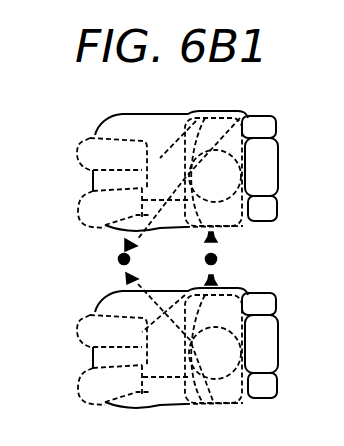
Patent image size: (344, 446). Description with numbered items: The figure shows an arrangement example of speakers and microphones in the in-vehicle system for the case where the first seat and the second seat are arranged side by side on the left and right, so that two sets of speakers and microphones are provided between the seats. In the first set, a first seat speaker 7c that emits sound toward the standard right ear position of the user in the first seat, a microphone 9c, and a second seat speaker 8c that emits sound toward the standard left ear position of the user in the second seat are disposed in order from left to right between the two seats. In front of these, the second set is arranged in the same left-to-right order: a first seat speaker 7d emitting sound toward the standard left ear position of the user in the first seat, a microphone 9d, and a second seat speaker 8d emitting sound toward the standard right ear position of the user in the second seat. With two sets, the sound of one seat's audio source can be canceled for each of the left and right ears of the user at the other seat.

The first seat speaker 7c is at (217, 281).
The first seat speaker 7d is at (127, 279).
The second seat speaker 8c is at (217, 242).
The second seat speaker 8d is at (127, 246).
The microphone 9c is at (205, 259).
The microphone 9d is at (130, 262).